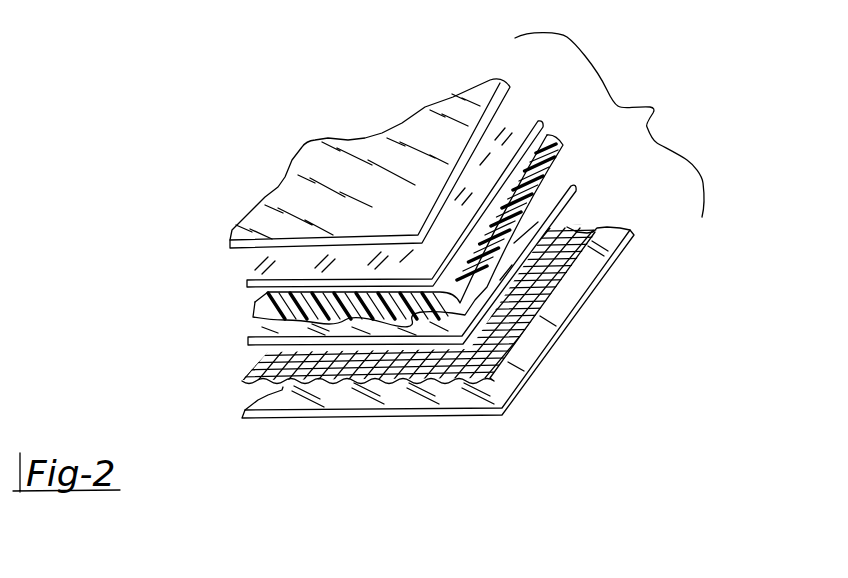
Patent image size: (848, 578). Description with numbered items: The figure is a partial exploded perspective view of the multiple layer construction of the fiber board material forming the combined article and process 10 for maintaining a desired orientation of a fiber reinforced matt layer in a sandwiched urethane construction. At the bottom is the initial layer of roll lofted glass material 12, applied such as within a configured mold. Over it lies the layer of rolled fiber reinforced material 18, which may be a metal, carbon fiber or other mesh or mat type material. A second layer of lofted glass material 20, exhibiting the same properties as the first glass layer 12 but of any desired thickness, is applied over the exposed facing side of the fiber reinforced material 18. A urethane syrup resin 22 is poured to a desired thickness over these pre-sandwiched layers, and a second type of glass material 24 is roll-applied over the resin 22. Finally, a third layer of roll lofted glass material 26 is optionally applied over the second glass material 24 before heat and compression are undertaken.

The combined article and process 10 is at (613, 125).
The third layer of roll lofted glass material 26 is at (233, 229).
The second type of glass material 24 is at (247, 279).
The urethane syrup resin 22 is at (253, 304).
The second layer of lofted glass material 20 is at (248, 340).
The rolled fiber reinforced material 18 is at (244, 382).
The roll lofted glass material 12 is at (245, 412).